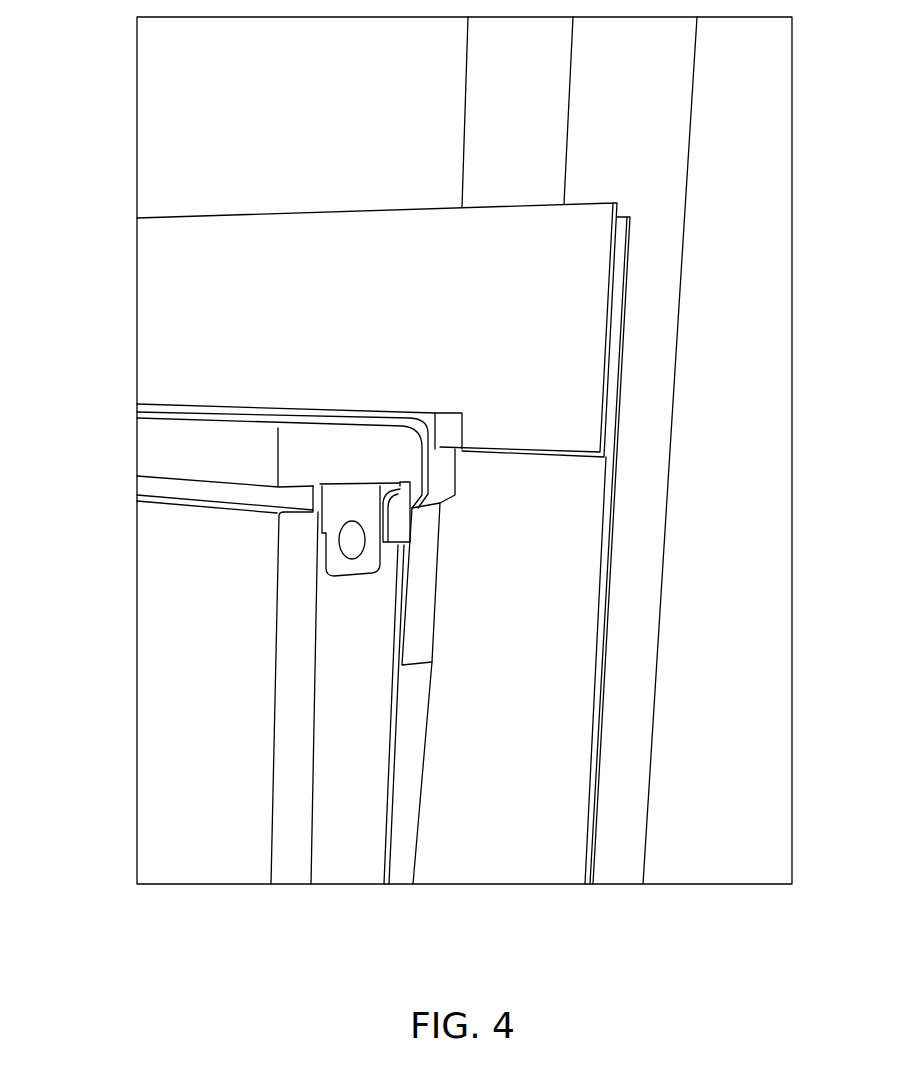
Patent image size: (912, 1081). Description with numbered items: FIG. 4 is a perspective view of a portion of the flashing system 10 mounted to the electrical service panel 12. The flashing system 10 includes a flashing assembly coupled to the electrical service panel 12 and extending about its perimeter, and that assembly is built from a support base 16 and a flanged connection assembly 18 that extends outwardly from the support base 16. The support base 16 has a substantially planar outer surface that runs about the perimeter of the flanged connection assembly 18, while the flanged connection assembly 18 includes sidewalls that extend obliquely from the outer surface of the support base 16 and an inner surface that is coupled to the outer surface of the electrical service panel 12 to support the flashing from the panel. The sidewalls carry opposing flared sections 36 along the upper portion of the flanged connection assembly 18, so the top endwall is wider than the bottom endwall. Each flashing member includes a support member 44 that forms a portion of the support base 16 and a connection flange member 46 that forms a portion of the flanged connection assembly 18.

The flashing system 10 is at (295, 165).
The electrical service panel 12 is at (173, 613).
The support base 16 is at (616, 270).
The flanged connection assembly 18 is at (408, 738).
The flared sections 36 is at (475, 484).
The support member 44 is at (357, 210).
The connection flange member 46 is at (402, 417).